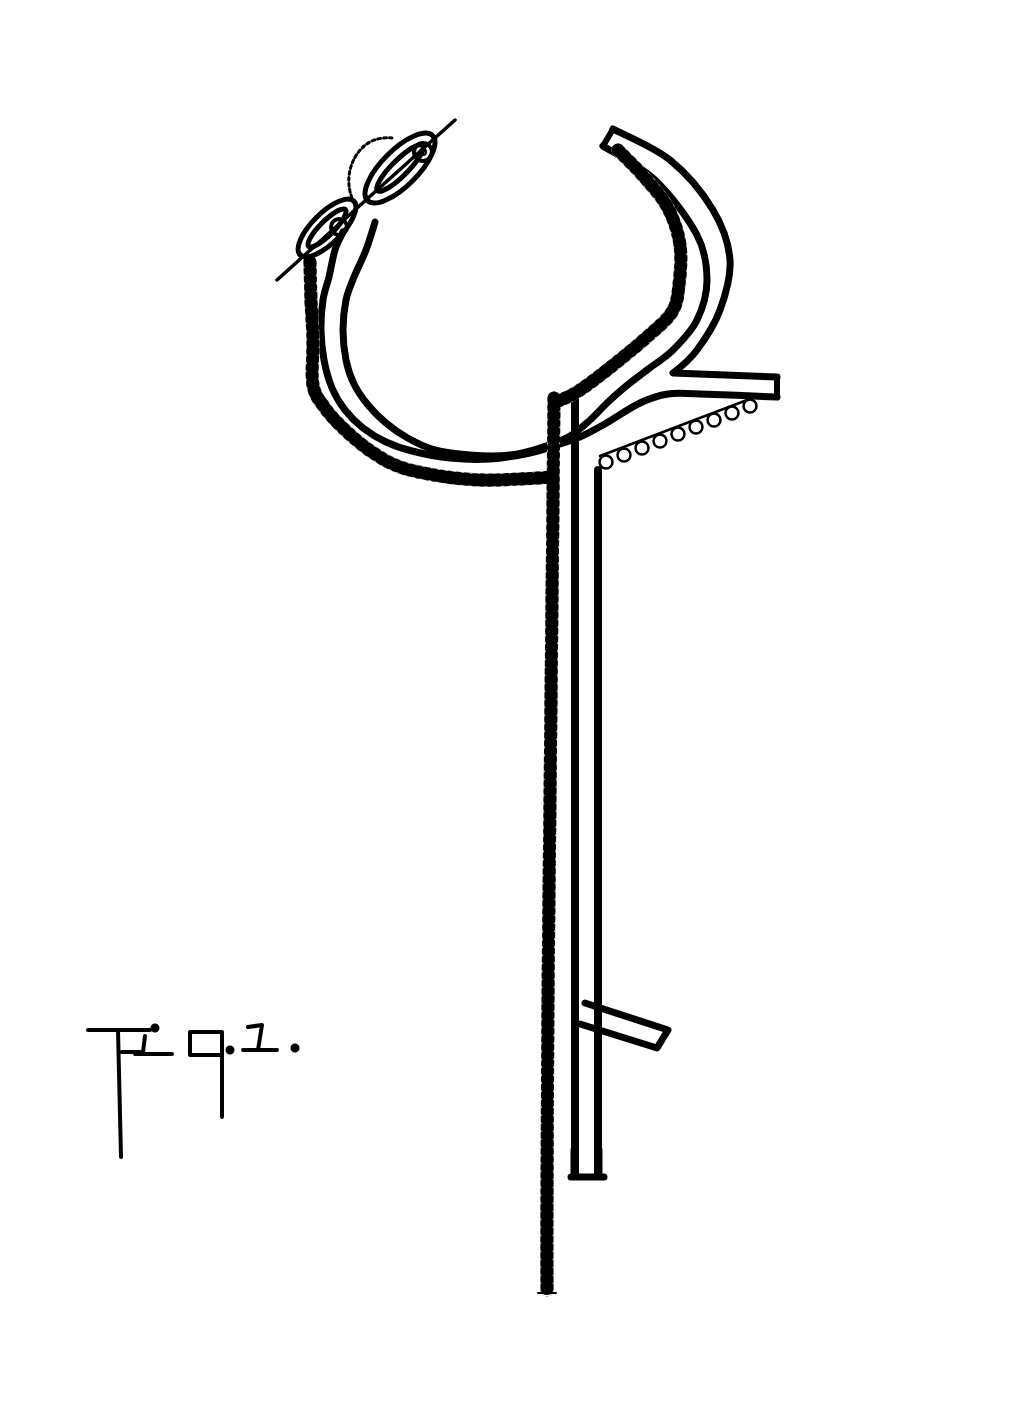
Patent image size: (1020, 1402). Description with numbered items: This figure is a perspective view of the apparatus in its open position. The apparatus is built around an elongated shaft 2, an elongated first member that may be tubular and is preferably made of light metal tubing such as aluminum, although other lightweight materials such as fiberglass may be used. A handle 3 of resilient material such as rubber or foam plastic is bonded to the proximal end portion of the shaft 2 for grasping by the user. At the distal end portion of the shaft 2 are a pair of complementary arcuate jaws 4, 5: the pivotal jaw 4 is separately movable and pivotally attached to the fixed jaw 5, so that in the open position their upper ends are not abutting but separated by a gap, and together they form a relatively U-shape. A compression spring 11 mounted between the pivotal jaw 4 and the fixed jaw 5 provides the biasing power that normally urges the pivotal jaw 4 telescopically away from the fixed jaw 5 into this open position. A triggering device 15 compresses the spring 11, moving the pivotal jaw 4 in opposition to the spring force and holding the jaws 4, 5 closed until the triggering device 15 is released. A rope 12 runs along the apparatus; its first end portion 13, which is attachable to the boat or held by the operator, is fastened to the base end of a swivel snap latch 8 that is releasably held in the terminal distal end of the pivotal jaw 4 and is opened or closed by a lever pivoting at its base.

The shaft 2 is at (610, 723).
The handle 3 is at (610, 1158).
The pivotal arcuate jaw 4 is at (347, 435).
The fixed arcuate jaw 5 is at (737, 249).
The swivel snap latch 8 is at (382, 118).
The compression spring 11 is at (687, 447).
The rope 12 is at (540, 777).
The first end portion of the rope 13 is at (290, 250).
The triggering device 15 is at (672, 1013).